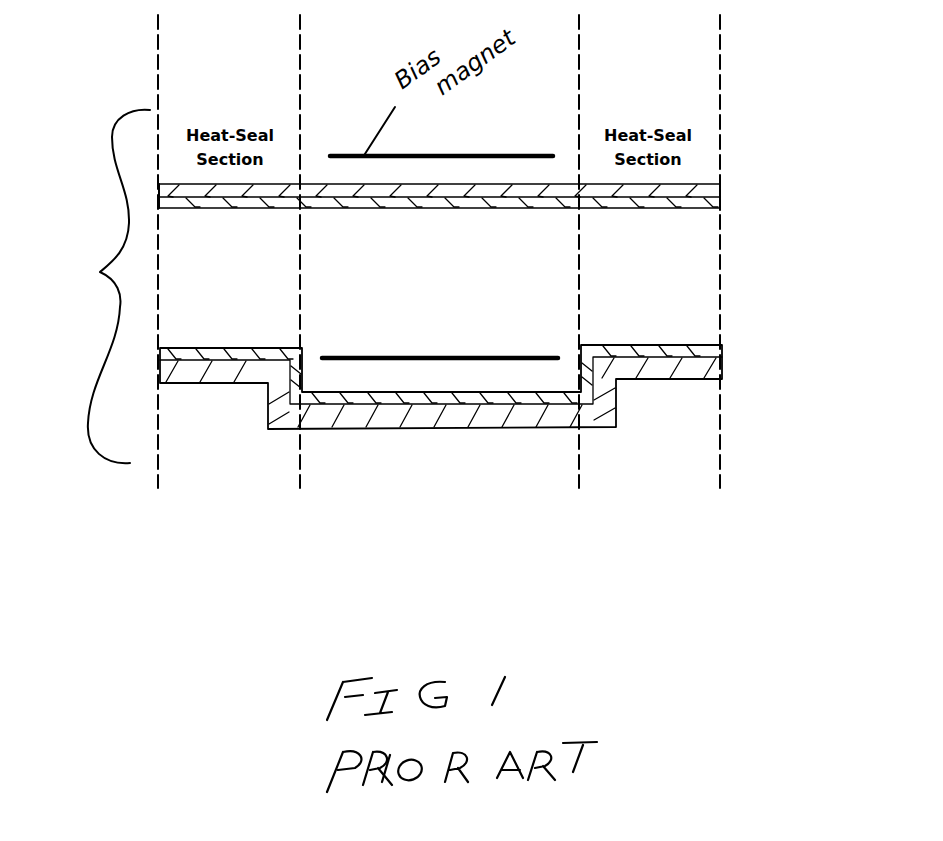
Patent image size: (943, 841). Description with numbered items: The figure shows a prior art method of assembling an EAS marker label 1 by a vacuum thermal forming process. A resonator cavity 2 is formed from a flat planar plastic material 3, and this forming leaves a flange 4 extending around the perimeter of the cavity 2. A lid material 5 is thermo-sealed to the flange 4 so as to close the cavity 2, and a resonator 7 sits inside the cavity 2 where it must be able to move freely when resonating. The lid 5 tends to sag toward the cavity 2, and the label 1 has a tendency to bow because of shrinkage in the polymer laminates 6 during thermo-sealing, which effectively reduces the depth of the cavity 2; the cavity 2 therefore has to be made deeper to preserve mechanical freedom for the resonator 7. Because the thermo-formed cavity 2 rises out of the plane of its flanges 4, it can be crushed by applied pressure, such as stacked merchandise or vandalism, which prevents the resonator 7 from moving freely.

The label 1 is at (60, 297).
The resonator cavity 2 is at (438, 388).
The flat planar plastic material 3 is at (751, 369).
The flange 4 is at (675, 377).
The lid material 5 is at (754, 197).
The polymer laminates 6 is at (647, 208).
The resonator 7 is at (487, 352).